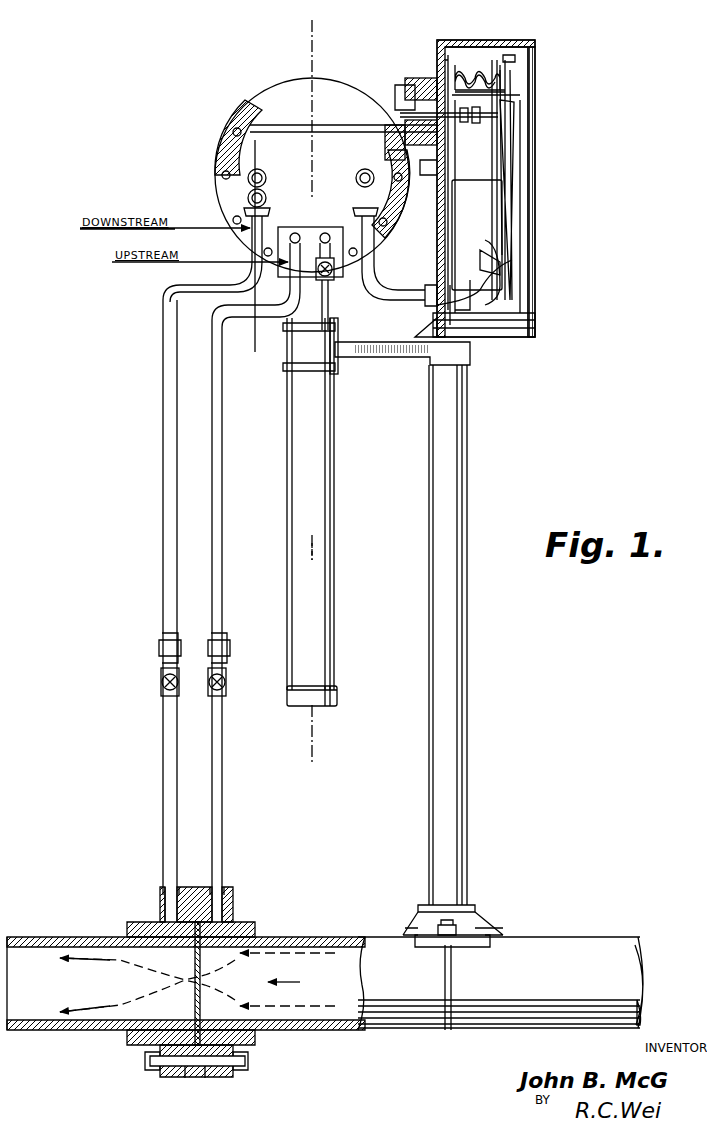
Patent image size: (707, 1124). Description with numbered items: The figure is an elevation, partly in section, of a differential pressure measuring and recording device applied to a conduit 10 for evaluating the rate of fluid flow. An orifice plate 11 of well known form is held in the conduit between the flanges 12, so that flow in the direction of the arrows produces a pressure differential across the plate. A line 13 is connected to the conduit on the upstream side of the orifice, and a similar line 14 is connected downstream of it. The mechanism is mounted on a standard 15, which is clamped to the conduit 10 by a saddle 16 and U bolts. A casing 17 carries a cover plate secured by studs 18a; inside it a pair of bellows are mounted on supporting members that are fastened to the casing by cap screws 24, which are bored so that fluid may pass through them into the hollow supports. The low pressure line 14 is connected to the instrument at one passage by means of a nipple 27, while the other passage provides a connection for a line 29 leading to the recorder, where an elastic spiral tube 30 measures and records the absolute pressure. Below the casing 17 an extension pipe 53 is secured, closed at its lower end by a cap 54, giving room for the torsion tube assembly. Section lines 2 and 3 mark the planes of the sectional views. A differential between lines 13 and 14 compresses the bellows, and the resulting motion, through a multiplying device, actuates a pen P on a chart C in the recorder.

The section line 2- 2 is at (295, 33).
The section line 3- 3 is at (238, 148).
The conduit 10 is at (314, 935).
The orifice plate 11 is at (228, 921).
The flanges 12 is at (205, 1078).
The line 13 is at (222, 822).
The line 14 is at (163, 820).
The standard 15 is at (456, 735).
The saddle 16 is at (490, 930).
The casing 17 is at (243, 165).
The studs 18a is at (235, 130).
The cap screws 24 is at (356, 178).
The nipple 27 is at (250, 216).
The line 29 is at (388, 298).
The elastic spiral tube 30 is at (470, 65).
The pipe 53 is at (320, 592).
The cap 54 is at (338, 701).
The pen P is at (507, 176).
The chart C is at (504, 254).